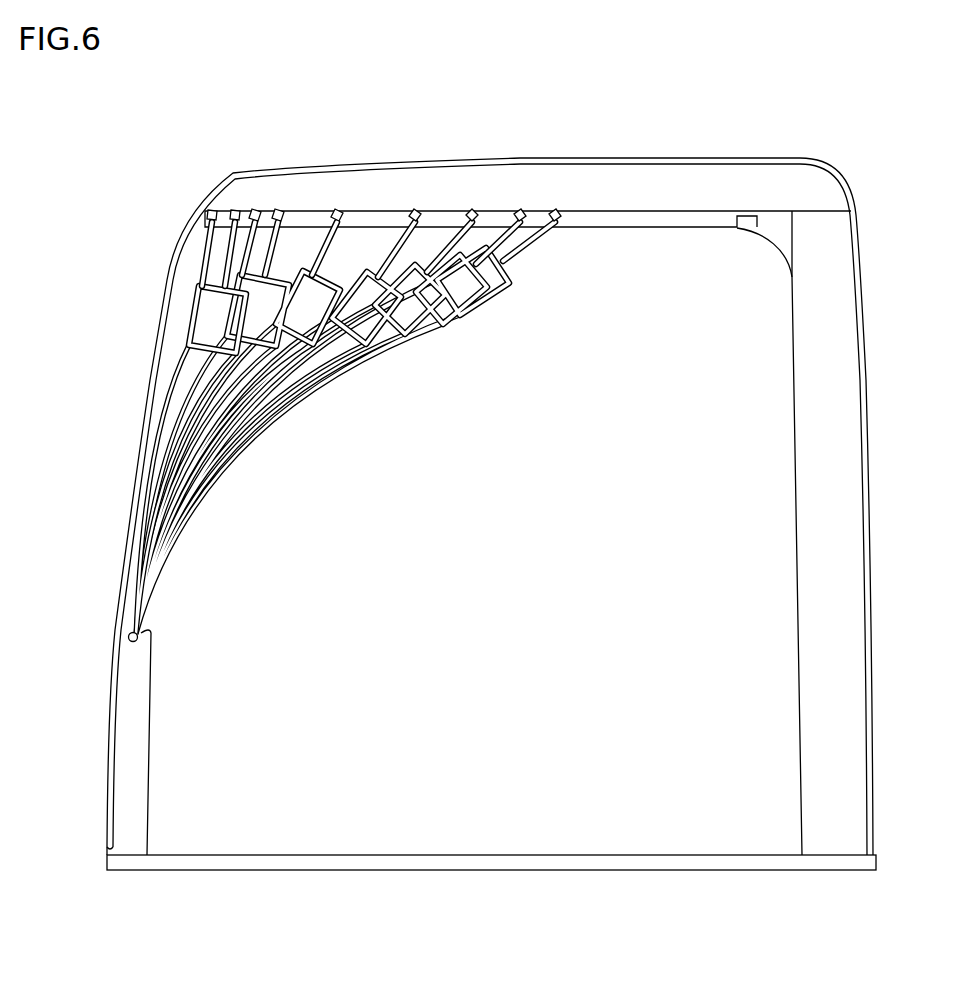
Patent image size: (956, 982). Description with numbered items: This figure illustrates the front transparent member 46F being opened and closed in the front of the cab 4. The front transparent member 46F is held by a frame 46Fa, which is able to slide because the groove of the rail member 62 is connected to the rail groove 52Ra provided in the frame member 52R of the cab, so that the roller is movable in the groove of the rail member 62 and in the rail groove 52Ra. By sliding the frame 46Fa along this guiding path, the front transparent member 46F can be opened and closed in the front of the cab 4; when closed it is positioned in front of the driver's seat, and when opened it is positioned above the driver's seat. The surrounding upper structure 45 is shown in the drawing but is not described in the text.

The cab 4 is at (437, 148).
The upper cover frame 45 is at (538, 158).
The frame member 52R is at (488, 193).
The rail groove 52Ra is at (593, 210).
The rail member 62 is at (220, 240).
The frame 46Fa is at (200, 273).
The front transparent member 46F is at (348, 421).